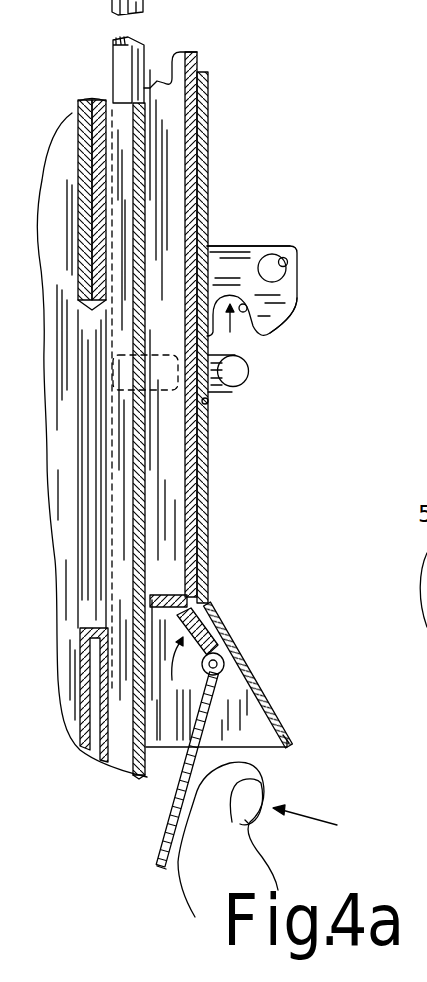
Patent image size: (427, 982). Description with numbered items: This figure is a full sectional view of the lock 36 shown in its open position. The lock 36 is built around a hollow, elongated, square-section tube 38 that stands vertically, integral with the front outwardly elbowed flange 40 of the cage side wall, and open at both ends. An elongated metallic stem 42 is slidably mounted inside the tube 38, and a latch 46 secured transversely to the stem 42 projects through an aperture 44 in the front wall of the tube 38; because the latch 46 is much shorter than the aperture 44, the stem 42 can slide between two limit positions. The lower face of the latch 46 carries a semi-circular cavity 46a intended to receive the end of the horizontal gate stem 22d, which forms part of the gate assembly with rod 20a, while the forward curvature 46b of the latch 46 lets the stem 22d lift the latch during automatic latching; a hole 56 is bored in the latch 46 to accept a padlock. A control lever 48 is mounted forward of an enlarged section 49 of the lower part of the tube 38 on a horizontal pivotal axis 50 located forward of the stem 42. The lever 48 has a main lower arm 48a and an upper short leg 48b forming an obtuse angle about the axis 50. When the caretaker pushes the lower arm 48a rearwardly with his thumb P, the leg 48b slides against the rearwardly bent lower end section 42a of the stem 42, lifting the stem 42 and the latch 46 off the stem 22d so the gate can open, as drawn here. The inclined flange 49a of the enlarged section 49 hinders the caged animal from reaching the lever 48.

The gate rod 20a is at (147, 57).
The stem 42 is at (197, 52).
The elbowed flange 40 is at (208, 113).
The tube 38 is at (208, 136).
The latch 46 is at (228, 252).
The hole 56 is at (288, 263).
The semi-circular cavity 46a is at (255, 312).
The forward curvature 46b is at (290, 313).
The lock 36 is at (305, 318).
The horizontal stem 22d is at (287, 378).
The aperture 44 is at (217, 397).
The lower end section 42a is at (157, 594).
The upper short leg 48b is at (210, 617).
The pivotal axis 50 is at (236, 658).
The enlarged section 49 is at (250, 683).
The inclined flange 49a is at (275, 727).
The control lever 48 is at (172, 811).
The main lower arm 48a is at (163, 841).
The thumb P is at (236, 862).